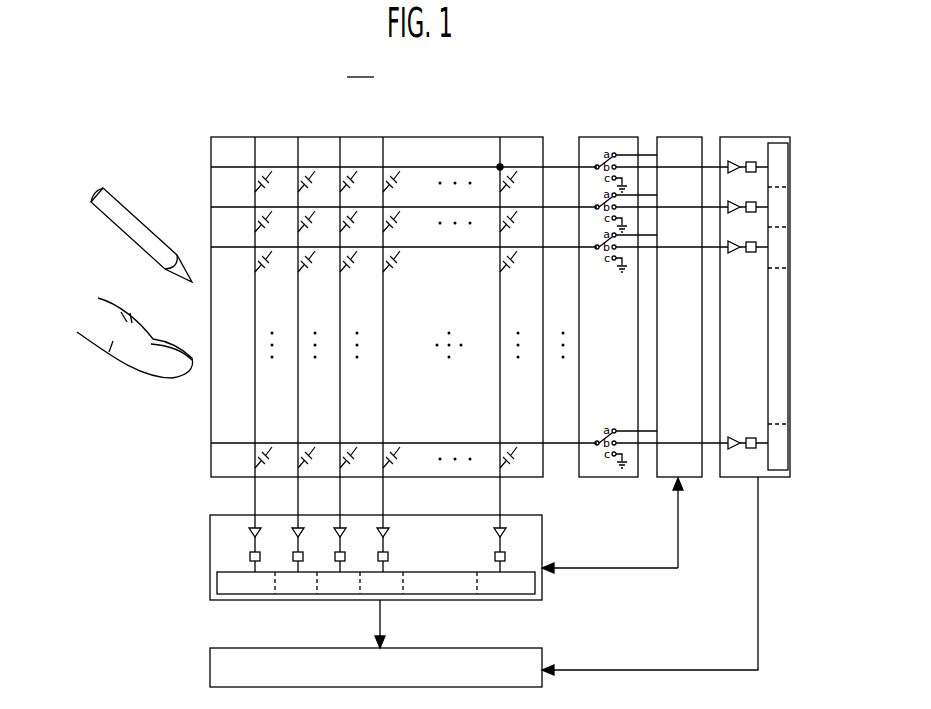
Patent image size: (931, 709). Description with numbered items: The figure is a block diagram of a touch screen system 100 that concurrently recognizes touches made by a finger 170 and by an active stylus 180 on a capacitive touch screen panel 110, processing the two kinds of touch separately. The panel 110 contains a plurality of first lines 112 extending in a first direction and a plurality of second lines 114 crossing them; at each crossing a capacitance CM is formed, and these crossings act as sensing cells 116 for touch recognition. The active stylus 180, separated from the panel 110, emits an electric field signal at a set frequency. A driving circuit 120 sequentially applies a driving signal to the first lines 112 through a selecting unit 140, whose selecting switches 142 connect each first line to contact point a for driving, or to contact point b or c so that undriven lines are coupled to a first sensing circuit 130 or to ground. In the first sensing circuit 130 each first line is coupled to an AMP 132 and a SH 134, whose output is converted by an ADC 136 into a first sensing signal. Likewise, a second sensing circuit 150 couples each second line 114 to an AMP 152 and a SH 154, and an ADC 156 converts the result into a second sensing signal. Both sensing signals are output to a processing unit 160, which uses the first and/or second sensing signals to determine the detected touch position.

The touch screen system 100 is at (360, 66).
The touch screen panel 110 is at (203, 166).
The first lines 112 is at (530, 166).
The second lines 114 is at (500, 143).
The sensing cells 116 is at (498, 166).
The driving circuit 120 is at (676, 137).
The first sensing circuit 130 is at (740, 137).
The amplifying unit (AMP) 132 is at (730, 160).
The sample/hold circuit (SH) 134 is at (752, 160).
The analog-digital converter (ADC) 136 is at (782, 143).
The selecting unit 140 is at (596, 137).
The selecting switches 142 is at (613, 150).
The second sensing circuit 150 is at (210, 543).
The amplifying unit (AMP) 152 is at (248, 529).
The sample/hold circuit (SH) 154 is at (248, 558).
The analog-digital converter (ADC) 156 is at (217, 592).
The processing unit 160 is at (210, 669).
The finger 170 is at (125, 366).
The active stylus 180 is at (142, 223).